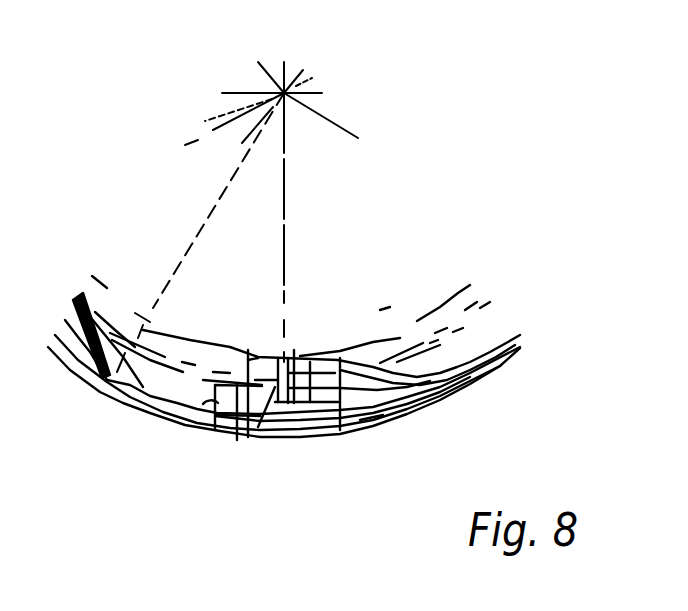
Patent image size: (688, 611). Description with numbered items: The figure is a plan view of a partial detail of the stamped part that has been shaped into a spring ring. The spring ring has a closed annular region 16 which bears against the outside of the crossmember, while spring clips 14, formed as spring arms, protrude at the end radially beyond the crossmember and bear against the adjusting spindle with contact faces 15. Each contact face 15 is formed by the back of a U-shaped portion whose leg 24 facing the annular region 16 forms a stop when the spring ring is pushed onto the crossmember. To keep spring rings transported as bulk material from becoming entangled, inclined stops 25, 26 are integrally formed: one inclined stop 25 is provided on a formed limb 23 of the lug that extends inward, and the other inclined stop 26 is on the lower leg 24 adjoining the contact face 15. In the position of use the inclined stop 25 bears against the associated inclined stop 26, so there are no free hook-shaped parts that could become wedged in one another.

The spring clip 14 is at (398, 330).
The contact face 15 is at (294, 350).
The annular region 16 is at (392, 417).
The formed limb 23 is at (213, 404).
The leg 24 is at (294, 437).
The inclined stop 25 is at (248, 352).
The inclined stop 26 is at (248, 352).